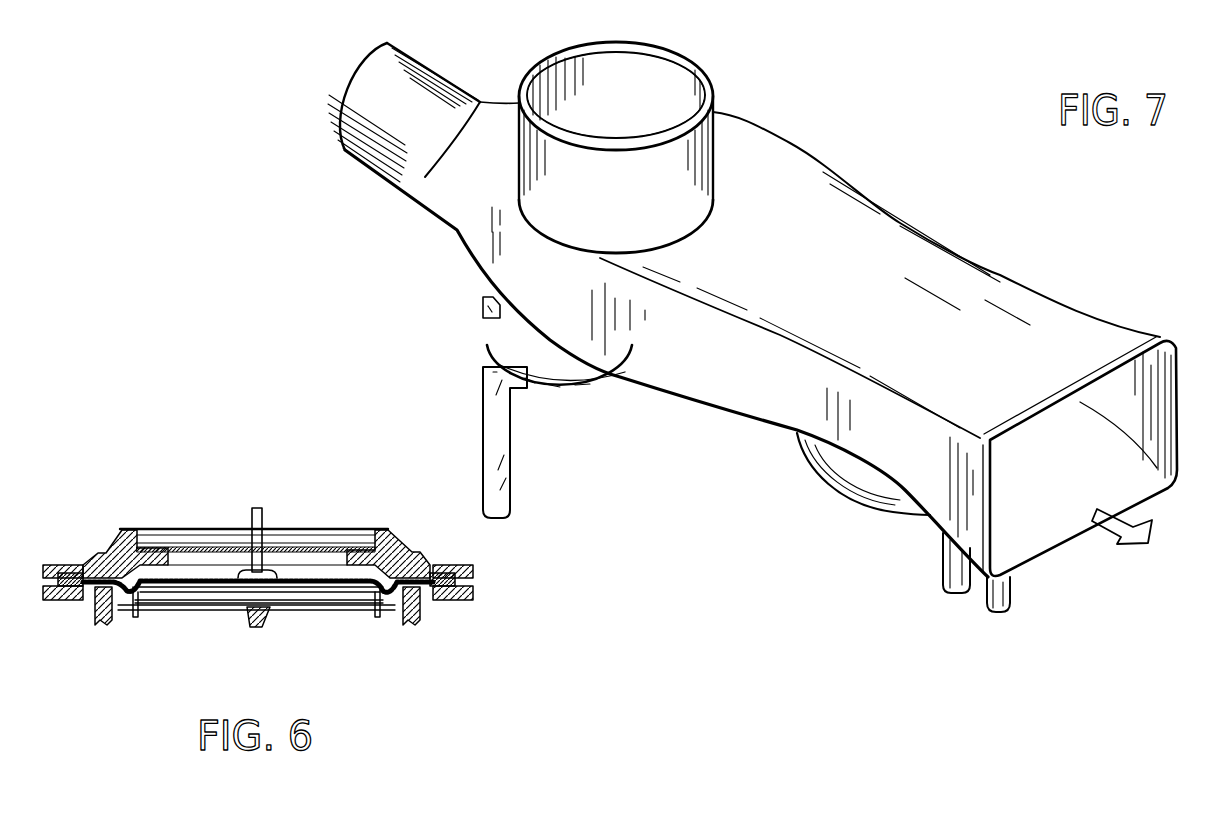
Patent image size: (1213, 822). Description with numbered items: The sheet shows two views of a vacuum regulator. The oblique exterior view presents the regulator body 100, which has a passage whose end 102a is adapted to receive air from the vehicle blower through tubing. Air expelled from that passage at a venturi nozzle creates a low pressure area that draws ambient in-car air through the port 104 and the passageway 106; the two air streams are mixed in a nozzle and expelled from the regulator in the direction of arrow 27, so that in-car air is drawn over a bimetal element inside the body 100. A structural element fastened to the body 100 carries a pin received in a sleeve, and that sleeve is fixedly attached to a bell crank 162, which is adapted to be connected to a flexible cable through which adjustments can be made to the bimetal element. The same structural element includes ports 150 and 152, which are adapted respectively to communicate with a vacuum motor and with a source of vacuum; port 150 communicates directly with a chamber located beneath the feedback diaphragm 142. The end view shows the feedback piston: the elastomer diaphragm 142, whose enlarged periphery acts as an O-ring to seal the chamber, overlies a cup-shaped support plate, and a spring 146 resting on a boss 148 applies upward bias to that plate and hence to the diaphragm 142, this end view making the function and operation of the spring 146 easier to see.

In FIG. 7, the arrow 27 is at (1134, 541).
In FIG. 7, the body 100 is at (768, 402).
In FIG. 7, the end of passage 102a is at (426, 111).
In FIG. 7, the port 104 is at (687, 72).
In FIG. 7, the passageway 106 is at (641, 112).
In FIG. 6, the feedback diaphragm 142 is at (95, 605).
In FIG. 6, the spring 146 is at (347, 605).
In FIG. 6, the boss 148 is at (250, 616).
In FIG. 7, the port 150 is at (957, 570).
In FIG. 7, the port 152 is at (1010, 595).
In FIG. 7, the bell crank 162 is at (492, 466).